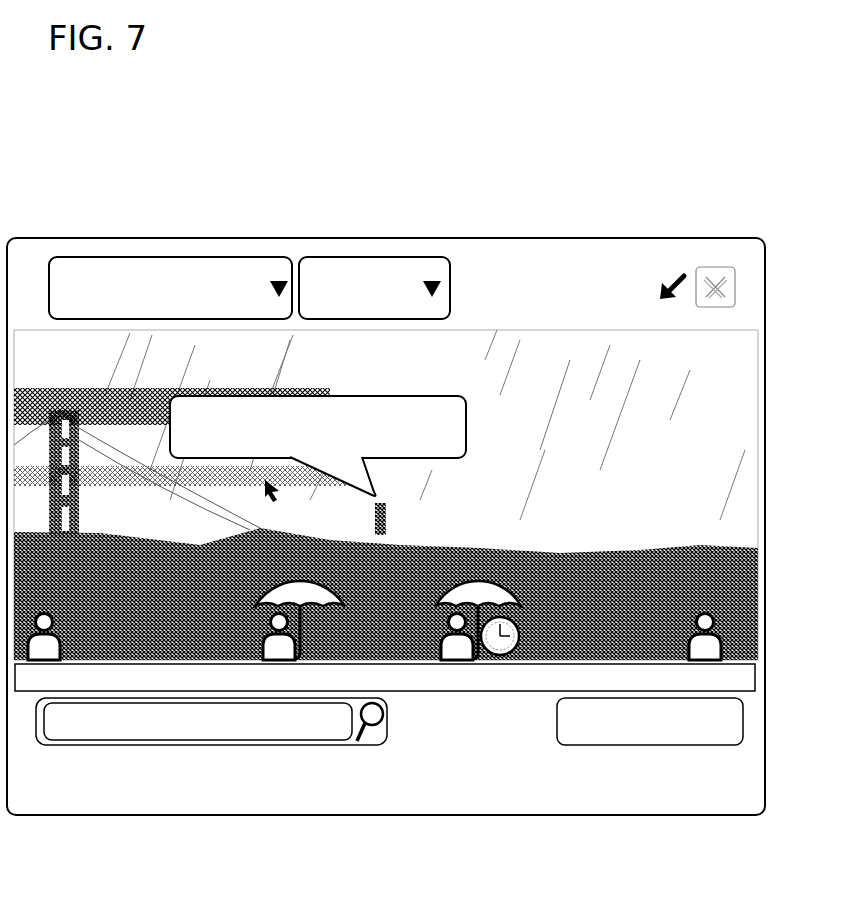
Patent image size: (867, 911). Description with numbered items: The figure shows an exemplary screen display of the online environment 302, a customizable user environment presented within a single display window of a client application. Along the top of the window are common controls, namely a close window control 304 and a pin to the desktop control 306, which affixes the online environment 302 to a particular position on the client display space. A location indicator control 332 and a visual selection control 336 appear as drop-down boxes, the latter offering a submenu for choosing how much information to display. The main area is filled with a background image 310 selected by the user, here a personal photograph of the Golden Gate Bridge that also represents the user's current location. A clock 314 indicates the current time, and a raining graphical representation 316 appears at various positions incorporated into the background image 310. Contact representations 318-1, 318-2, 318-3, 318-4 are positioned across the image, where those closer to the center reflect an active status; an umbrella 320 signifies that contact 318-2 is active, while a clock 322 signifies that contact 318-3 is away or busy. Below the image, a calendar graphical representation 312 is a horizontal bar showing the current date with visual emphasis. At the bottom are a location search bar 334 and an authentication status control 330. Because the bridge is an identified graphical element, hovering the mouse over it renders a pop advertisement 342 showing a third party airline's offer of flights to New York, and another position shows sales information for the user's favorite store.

The online environment 302 is at (614, 238).
The close window control 304 is at (735, 296).
The pin to the desktop control 306 is at (656, 283).
The background image 310 is at (722, 480).
The calendar graphical representation 312 is at (757, 681).
The clock 314 is at (414, 488).
The raining graphical representation 316 is at (278, 496).
The contact representation 318-1 is at (86, 635).
The contact representation 318-2 is at (239, 637).
The contact representation 318-3 is at (416, 637).
The contact representation 318-4 is at (758, 607).
The umbrella 320 is at (290, 615).
The clock 322 is at (513, 619).
The authentication status control 330 is at (668, 746).
The location indicator control 332 is at (228, 257).
The location search bar 334 is at (172, 747).
The visual selection control 336 is at (322, 257).
The pop advertisement 342 is at (410, 395).